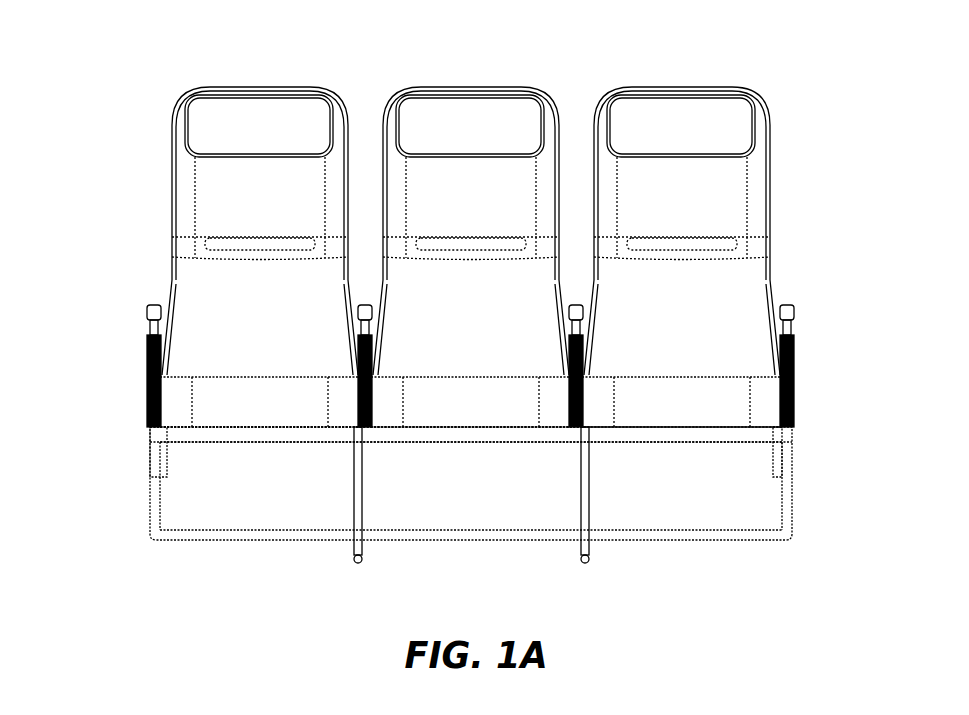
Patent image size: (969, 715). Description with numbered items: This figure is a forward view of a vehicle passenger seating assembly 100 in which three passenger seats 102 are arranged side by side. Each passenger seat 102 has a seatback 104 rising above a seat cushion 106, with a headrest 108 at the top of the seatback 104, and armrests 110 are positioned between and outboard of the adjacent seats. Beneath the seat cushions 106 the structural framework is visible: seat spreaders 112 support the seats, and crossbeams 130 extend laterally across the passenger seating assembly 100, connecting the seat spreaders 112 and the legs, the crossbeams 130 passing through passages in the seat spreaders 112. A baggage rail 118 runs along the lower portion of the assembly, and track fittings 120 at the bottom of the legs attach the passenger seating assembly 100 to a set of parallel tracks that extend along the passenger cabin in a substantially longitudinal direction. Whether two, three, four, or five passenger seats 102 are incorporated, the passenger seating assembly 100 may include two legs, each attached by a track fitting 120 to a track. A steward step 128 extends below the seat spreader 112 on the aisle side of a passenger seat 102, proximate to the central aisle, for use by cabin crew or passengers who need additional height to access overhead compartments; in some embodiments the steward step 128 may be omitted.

The passenger seating assembly 100 is at (78, 50).
The passenger seat 102 is at (165, 80).
The seatback 104 is at (237, 200).
The seat cushion 106 is at (267, 402).
The headrest 108 is at (517, 117).
The armrest 110 is at (153, 305).
The seat spreader 112 is at (357, 483).
The baggage rail 118 is at (782, 537).
The track fitting 120 is at (582, 557).
The steward step 128 is at (165, 460).
The crossbeam 130 is at (682, 433).